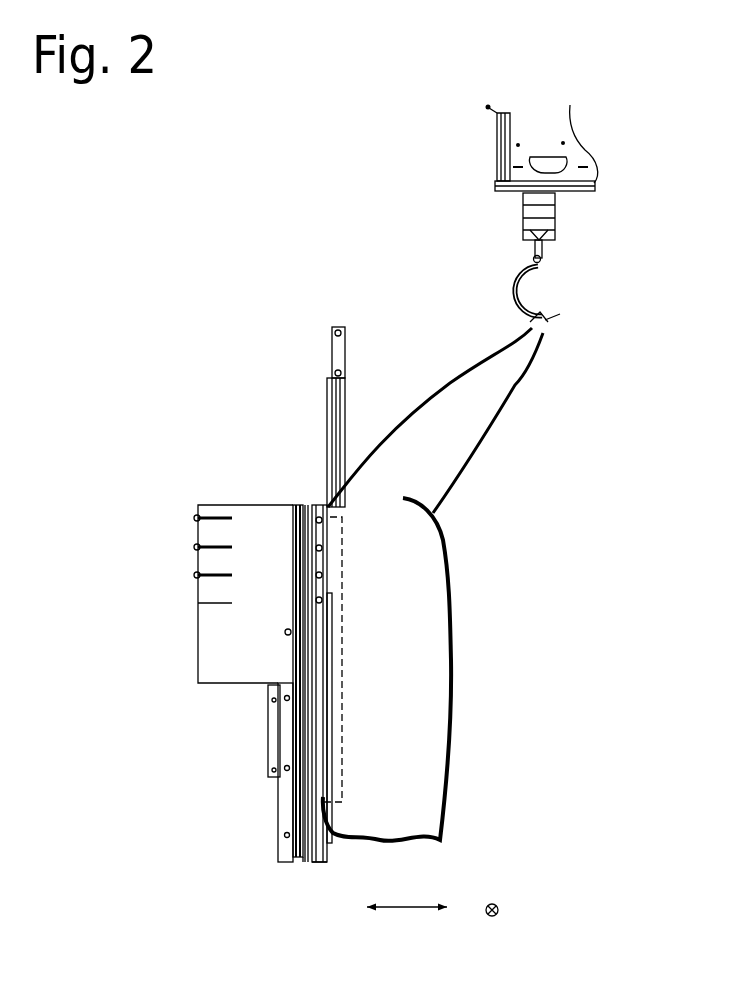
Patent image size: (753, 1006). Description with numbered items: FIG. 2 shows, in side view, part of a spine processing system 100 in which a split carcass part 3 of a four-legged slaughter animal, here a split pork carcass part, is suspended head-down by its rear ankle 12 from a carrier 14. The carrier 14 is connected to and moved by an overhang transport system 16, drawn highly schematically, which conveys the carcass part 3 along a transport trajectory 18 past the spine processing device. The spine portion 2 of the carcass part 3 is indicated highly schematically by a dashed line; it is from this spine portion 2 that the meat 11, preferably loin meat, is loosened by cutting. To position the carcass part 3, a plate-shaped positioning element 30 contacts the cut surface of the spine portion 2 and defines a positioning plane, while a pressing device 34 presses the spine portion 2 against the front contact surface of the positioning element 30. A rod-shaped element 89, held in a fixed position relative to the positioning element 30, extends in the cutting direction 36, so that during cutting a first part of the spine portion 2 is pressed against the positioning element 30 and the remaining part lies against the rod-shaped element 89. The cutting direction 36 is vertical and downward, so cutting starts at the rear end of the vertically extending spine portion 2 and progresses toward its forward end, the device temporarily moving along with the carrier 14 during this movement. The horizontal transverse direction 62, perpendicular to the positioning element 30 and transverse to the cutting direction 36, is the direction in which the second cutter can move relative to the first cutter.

The spine processing system 100 is at (387, 277).
The overhang transport system 16 is at (597, 192).
The carrier 14 is at (558, 270).
The rear ankle 12 is at (522, 347).
The split carcass part 3 is at (508, 443).
The meat 11 is at (395, 679).
The cutting direction 36 is at (163, 600).
The spine portion 2 is at (340, 770).
The rod-shaped element 89 is at (330, 717).
The pressing device 34 is at (343, 553).
The positioning element 30 is at (330, 847).
The transverse direction 62 is at (407, 907).
The transport trajectory 18 is at (495, 916).